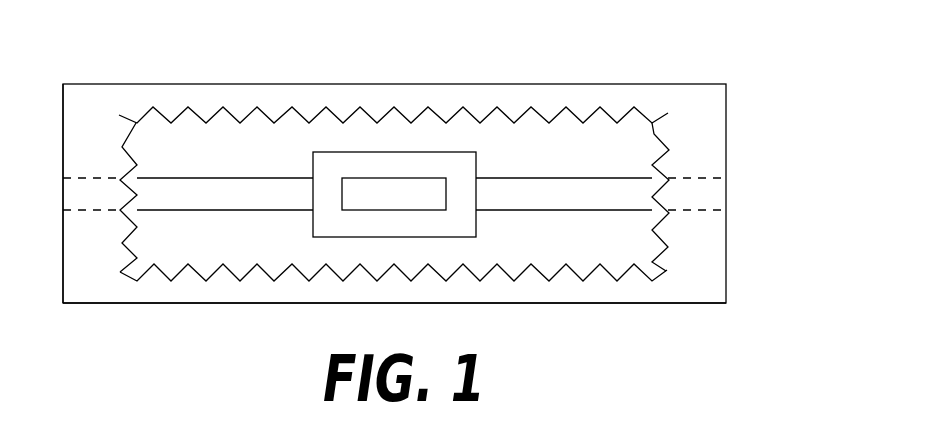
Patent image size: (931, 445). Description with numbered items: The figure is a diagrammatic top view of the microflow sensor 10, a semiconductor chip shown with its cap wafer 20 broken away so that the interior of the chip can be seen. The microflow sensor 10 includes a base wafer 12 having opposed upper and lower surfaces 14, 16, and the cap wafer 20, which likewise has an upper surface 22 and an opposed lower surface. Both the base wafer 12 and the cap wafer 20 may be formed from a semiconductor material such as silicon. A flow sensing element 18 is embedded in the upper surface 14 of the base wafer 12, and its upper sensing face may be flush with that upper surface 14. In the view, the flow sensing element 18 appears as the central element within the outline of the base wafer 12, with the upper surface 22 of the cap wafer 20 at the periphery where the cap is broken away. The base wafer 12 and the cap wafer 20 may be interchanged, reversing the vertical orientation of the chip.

The microflow sensor 10 is at (738, 102).
The base wafer 12 is at (227, 191).
The upper surface of the base wafer 14 is at (508, 189).
The lower surface of the base wafer 16 is at (394, 194).
The flow sensing element 18 is at (373, 178).
The cap wafer 20 is at (697, 290).
The upper surface of the cap wafer 22 is at (684, 90).